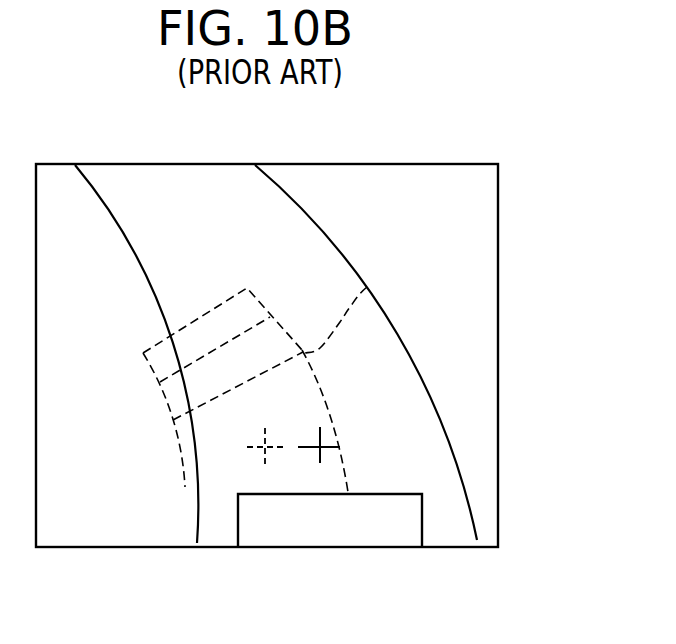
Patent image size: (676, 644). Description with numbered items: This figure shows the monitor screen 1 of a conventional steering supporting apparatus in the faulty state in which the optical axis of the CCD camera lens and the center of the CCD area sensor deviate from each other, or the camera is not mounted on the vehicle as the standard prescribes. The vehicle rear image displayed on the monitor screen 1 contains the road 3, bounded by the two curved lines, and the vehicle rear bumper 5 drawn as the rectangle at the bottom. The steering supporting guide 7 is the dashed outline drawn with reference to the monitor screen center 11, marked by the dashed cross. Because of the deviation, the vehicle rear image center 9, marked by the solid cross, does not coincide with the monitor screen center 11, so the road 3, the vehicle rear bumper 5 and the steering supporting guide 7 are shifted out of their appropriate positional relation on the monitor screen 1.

The monitor screen 1 is at (498, 228).
The road 3 is at (302, 202).
The vehicle rear bumper 5 is at (422, 517).
The steering supporting guide 7 is at (367, 287).
The vehicle rear image center 9 is at (321, 447).
The monitor screen center 11 is at (262, 450).